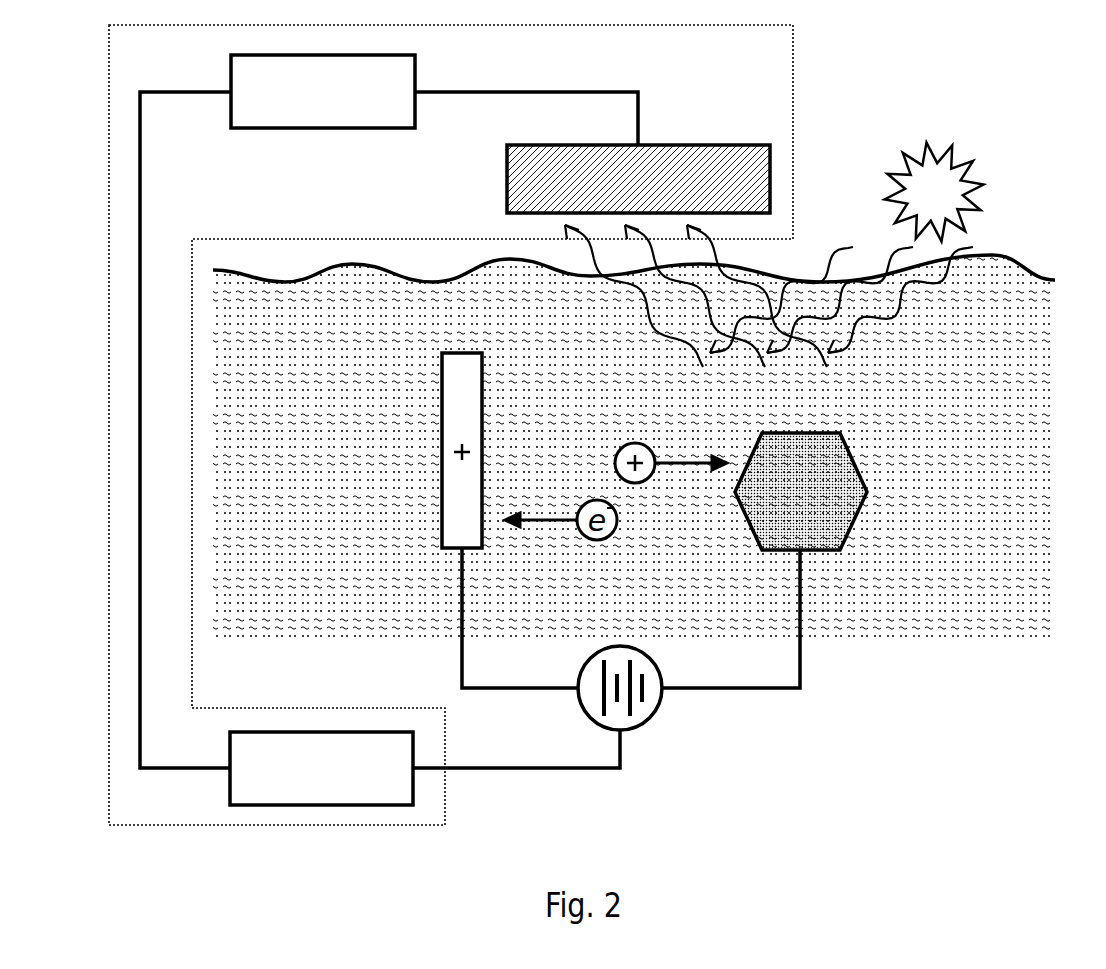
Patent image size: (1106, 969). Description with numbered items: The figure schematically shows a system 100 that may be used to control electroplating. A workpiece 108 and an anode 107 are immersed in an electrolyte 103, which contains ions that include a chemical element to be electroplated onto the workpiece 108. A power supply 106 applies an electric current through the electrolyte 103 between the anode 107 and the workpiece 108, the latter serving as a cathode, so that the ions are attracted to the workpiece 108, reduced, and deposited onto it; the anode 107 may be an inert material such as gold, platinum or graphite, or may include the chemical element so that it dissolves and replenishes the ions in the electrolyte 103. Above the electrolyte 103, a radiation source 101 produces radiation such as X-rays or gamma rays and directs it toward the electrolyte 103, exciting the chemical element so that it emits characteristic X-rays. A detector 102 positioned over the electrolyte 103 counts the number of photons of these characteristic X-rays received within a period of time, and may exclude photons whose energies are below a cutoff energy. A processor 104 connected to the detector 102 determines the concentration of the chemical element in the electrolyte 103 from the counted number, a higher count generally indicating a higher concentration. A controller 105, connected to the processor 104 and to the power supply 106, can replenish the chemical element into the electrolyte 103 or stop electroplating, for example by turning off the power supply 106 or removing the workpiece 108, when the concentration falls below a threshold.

The system 100 is at (451, 425).
The radiation source 101 is at (973, 157).
The detector 102 is at (638, 179).
The electrolyte 103 is at (634, 443).
The processor 104 is at (323, 91).
The controller 105 is at (321, 768).
The power supply 106 is at (667, 725).
The anode 107 is at (443, 517).
The workpiece 108 is at (801, 491).